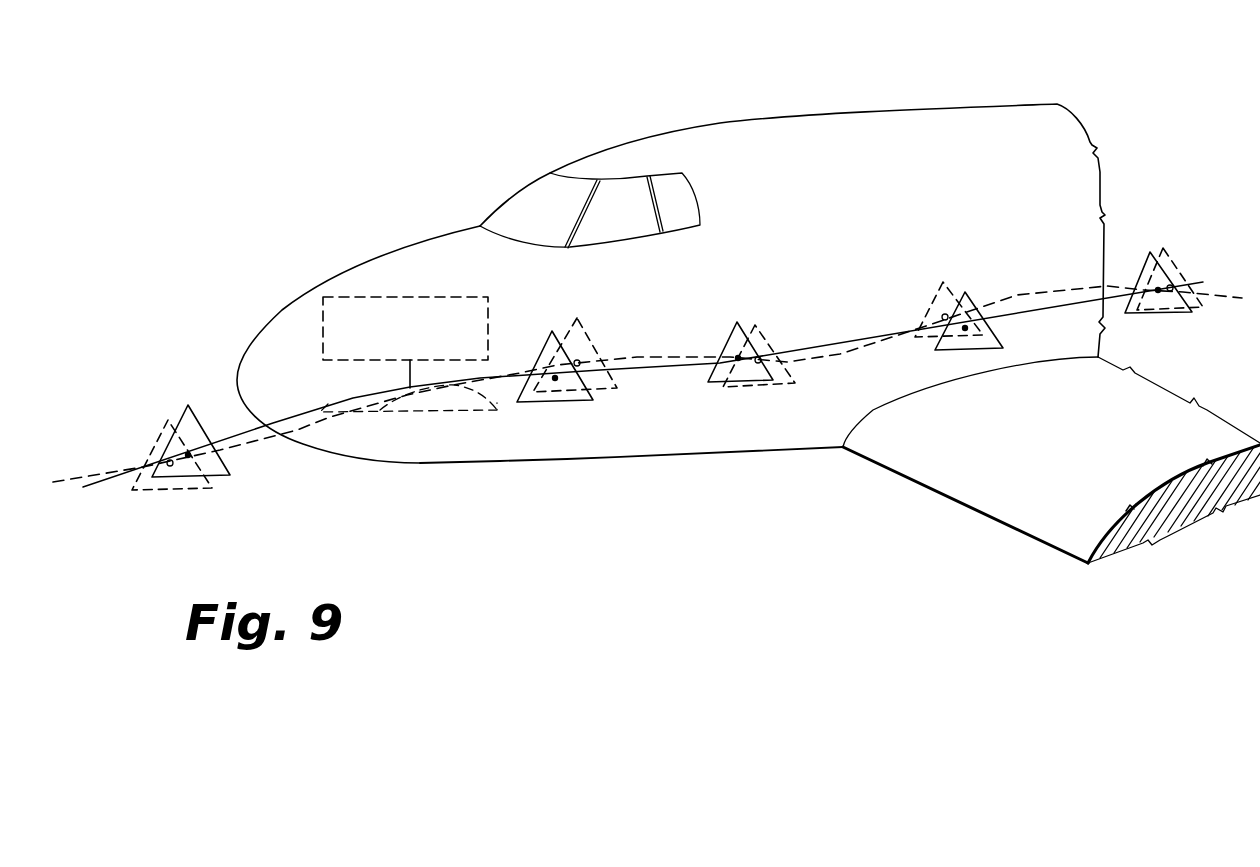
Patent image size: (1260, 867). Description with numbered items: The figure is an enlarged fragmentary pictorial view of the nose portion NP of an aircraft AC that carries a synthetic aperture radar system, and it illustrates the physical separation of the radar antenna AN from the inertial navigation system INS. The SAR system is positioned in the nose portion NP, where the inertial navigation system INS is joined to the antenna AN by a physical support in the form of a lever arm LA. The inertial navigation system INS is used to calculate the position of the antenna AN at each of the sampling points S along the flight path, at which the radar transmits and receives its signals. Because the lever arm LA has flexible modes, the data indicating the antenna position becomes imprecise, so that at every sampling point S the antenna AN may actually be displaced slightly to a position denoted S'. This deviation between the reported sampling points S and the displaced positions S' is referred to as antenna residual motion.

The aircraft AC is at (800, 112).
The nose portion NP is at (337, 272).
The inertial navigation system INS is at (398, 293).
The lever arm LA is at (403, 377).
The antenna AN is at (420, 413).
The sampling points S is at (672, 348).
The displaced antenna position S' is at (647, 358).